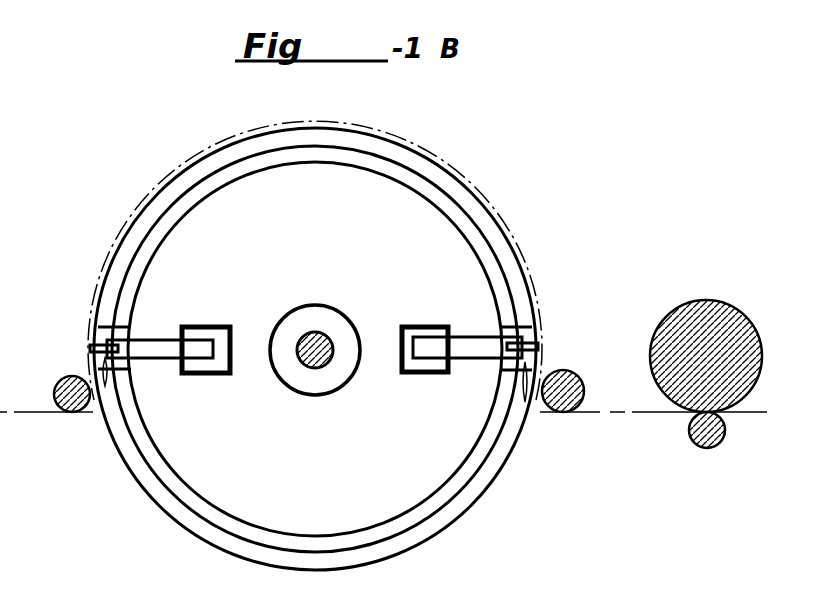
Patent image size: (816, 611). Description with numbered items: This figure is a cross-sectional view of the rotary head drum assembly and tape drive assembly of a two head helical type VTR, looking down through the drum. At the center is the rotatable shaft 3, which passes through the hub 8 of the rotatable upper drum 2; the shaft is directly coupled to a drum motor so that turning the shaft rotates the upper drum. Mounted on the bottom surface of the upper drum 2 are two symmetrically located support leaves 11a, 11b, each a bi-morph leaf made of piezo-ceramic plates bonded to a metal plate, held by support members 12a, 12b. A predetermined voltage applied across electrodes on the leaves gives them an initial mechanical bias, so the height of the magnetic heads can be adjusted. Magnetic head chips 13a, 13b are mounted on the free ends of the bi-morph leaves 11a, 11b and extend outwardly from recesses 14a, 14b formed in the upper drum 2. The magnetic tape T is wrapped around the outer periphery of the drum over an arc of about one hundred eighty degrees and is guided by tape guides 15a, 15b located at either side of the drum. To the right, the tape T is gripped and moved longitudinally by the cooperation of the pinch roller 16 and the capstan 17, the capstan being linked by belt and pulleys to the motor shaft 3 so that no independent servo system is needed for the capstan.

The upper drum 2 is at (500, 240).
The shaft 3 is at (330, 328).
The hub 8 is at (306, 303).
The support leaf 11a is at (598, 308).
The support leaf 11b is at (158, 340).
The support member 12a is at (427, 327).
The support member 12b is at (207, 327).
The magnetic head chip 13a is at (540, 343).
The magnetic head chip 13b is at (118, 358).
The recess 14a is at (530, 380).
The recess 14b is at (100, 386).
The tape guide 15a is at (584, 387).
The tape guide 15b is at (57, 382).
The pinch roller 16 is at (686, 310).
The capstan 17 is at (690, 439).
The magnetic tape T is at (30, 414).